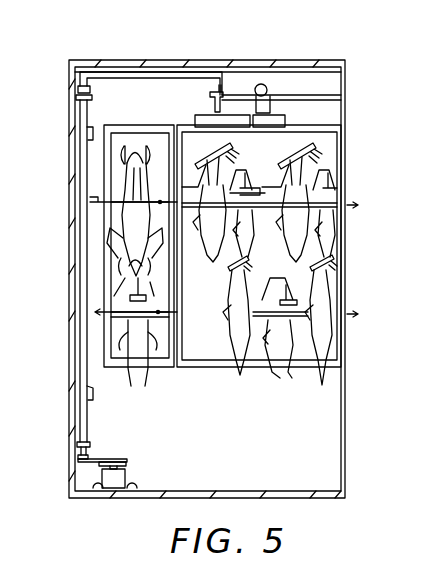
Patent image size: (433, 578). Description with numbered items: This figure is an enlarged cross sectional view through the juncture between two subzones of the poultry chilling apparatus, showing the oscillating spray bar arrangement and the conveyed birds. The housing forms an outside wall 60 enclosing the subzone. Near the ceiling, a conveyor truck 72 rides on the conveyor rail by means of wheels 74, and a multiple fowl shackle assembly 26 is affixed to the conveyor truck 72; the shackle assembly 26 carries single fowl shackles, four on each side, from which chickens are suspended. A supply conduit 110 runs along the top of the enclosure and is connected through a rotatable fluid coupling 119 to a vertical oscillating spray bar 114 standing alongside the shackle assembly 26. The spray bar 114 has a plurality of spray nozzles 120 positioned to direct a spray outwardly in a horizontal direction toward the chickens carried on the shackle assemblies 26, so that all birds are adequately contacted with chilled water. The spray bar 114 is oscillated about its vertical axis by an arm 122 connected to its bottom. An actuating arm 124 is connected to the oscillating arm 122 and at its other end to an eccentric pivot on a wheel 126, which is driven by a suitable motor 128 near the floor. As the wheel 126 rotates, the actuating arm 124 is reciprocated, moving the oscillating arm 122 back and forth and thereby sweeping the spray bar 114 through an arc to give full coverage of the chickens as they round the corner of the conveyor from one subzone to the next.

The multiple fowl shackle assembly 26 is at (134, 119).
The outside wall 60 is at (70, 181).
The conveyor truck 72 is at (210, 101).
The wheels 74 is at (262, 90).
The supply conduit 110 is at (192, 72).
The oscillating spray bar 114 is at (88, 238).
The rotatable fluid coupling 119 is at (78, 90).
The spray nozzles 120 is at (90, 131).
The oscillating arm 122 is at (83, 462).
The actuating arm 124 is at (108, 459).
The wheel 126 is at (127, 461).
The motor 128 is at (130, 480).